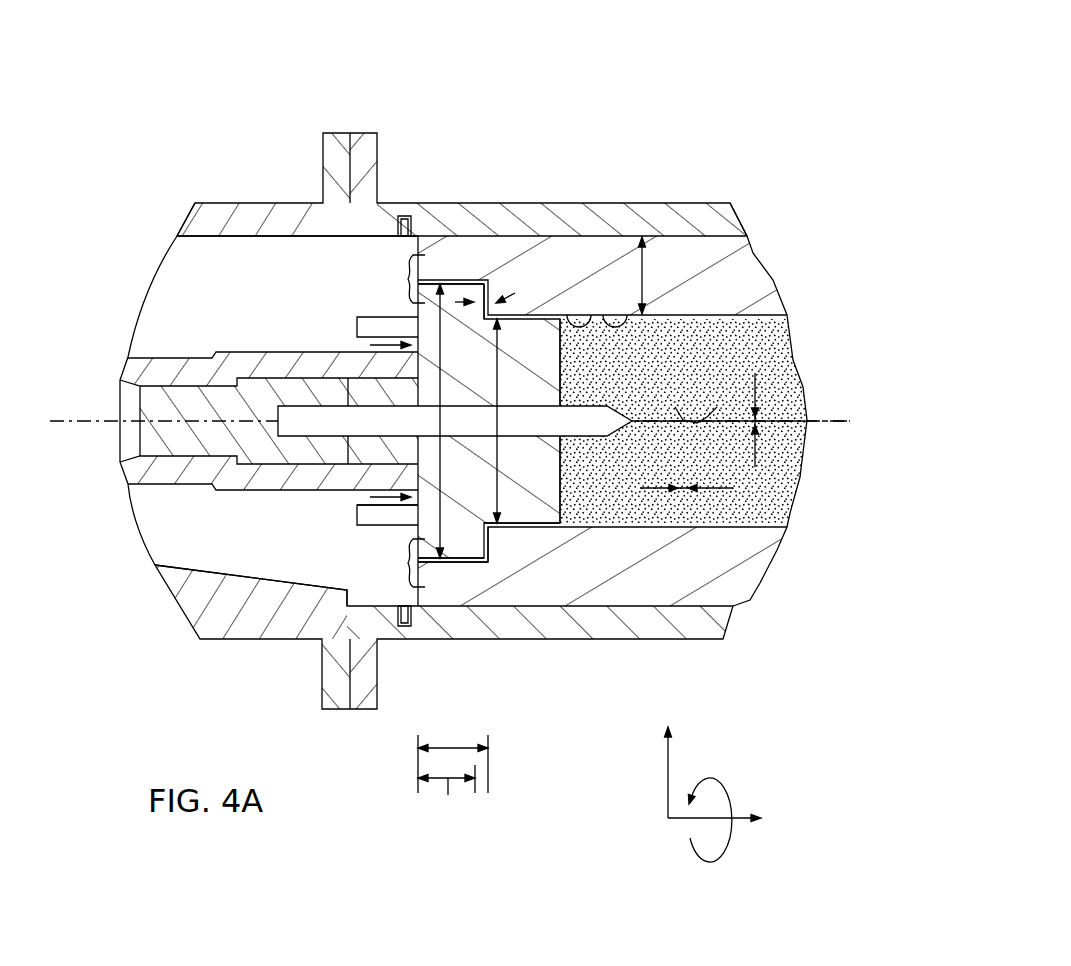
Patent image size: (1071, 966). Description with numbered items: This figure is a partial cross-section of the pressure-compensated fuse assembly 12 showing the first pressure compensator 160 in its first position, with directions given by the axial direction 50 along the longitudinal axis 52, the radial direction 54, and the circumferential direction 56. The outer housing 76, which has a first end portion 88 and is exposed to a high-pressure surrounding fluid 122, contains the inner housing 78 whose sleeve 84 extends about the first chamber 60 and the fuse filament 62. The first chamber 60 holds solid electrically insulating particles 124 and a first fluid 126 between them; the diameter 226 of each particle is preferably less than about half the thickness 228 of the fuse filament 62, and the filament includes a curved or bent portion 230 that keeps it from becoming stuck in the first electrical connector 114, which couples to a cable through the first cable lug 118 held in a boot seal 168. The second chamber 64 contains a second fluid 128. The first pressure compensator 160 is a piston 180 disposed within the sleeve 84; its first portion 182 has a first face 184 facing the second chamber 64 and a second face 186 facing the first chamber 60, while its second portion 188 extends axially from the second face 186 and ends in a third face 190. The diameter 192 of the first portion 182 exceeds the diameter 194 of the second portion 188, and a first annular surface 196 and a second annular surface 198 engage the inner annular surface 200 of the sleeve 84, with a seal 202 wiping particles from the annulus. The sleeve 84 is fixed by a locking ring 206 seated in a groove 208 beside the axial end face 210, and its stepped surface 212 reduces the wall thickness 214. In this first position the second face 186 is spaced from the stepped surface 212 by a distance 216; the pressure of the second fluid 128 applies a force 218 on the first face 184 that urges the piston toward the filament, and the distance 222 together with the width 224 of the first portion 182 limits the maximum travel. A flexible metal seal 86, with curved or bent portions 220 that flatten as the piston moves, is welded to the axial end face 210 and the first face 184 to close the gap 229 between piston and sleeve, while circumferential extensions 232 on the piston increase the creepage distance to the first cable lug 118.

The pressure-compensated fuse assembly 12 is at (676, 118).
The axial direction 50 is at (687, 820).
The longitudinal axis 52 is at (827, 422).
The radial direction 54 is at (668, 782).
The circumferential direction 56 is at (727, 798).
The first chamber 60 is at (768, 493).
The fuse filament 62 is at (725, 418).
The second chamber 64 is at (303, 557).
The outer housing 76 is at (680, 626).
The inner housing 78 is at (230, 217).
The sleeve 84 is at (598, 600).
The seal 86 is at (395, 278).
The first end portion 88 is at (270, 217).
The first electrical connector 114 is at (557, 413).
The first cable lug 118 is at (228, 352).
The surrounding fluid 122 is at (434, 65).
The solid electrically insulating particles 124 is at (768, 522).
The first fluid 126 is at (768, 347).
The second fluid 128 is at (250, 553).
The first pressure compensator 160 is at (453, 540).
The boot seal 168 is at (178, 358).
The piston 180 is at (453, 540).
The first portion 182 is at (457, 537).
The first face 184 is at (420, 533).
The second face 186 is at (460, 537).
The second portion 188 is at (540, 500).
The third face 190 is at (568, 507).
The diameter of first portion 192 is at (446, 480).
The diameter of second portion 194 is at (505, 462).
The first annular surface 196 is at (438, 283).
The second annular surface 198 is at (516, 292).
The inner annular surface 200 is at (618, 313).
The seal 202 is at (591, 314).
The locking ring 206 is at (400, 236).
The groove 208 is at (398, 216).
The axial end face 210 is at (416, 247).
The stepped surface 212 is at (490, 533).
The wall thickness 214 is at (645, 268).
The distance 216 is at (460, 290).
The force 218 is at (363, 497).
The curved or bent portion 220 is at (410, 290).
The distance 222 is at (443, 735).
The width 224 is at (452, 823).
The diameter 226 is at (717, 488).
The thickness 228 is at (755, 387).
The gap 229 is at (432, 281).
The curved or bent portion 230 is at (675, 407).
The circumferential extension 232 is at (352, 322).